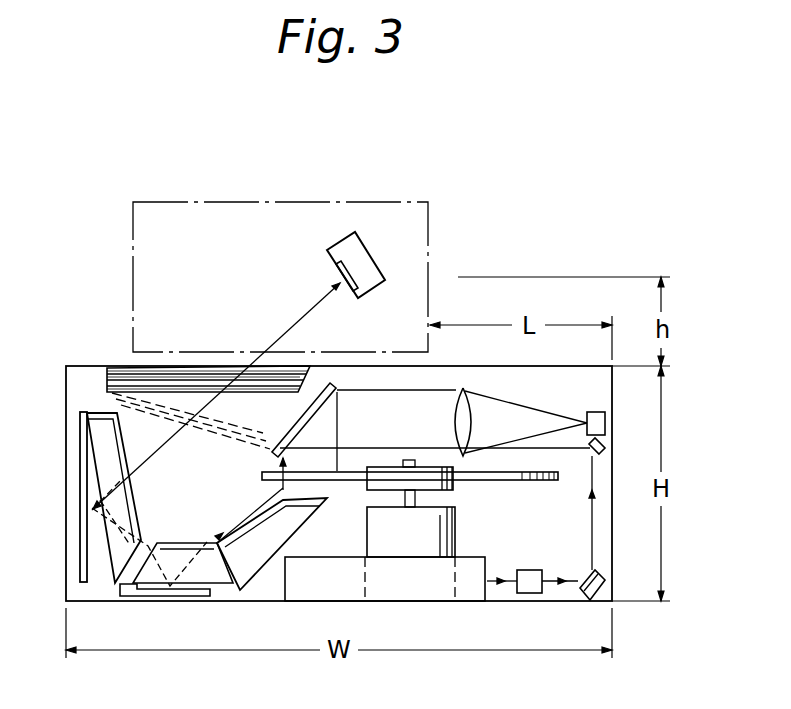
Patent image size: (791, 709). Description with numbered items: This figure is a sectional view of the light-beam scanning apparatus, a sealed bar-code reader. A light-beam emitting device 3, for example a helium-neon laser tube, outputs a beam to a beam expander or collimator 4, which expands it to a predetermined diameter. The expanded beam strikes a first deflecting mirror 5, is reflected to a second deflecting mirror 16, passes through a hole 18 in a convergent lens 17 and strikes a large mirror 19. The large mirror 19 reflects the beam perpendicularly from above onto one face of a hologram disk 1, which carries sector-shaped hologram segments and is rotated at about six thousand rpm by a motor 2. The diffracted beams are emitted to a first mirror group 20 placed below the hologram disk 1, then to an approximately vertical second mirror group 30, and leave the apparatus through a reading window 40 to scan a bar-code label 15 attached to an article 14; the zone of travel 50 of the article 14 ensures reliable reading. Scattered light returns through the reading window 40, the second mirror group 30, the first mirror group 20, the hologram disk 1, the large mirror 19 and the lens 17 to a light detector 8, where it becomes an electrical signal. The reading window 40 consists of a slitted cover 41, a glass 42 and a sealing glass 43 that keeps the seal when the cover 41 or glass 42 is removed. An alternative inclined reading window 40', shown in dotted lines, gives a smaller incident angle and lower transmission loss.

The hologram disk 1 is at (520, 481).
The motor 2 is at (455, 527).
The light-beam emitting device 3 is at (432, 596).
The collimator 4 is at (530, 594).
The first deflecting mirror 5 is at (592, 600).
The light detector 8 is at (606, 420).
The article 14 is at (372, 251).
The bar-code label 15 is at (338, 280).
The second deflecting mirror 16 is at (606, 446).
The convergent lens 17 is at (466, 392).
The hole 18 is at (470, 455).
The large mirror 19 is at (284, 425).
The first mirror group 20 is at (241, 595).
The second mirror group 30 is at (78, 462).
The reading window 40 is at (166, 391).
The reading window 40' is at (191, 444).
The cover 41 is at (116, 373).
The glass 42 is at (110, 386).
The sealing glass 43 is at (112, 390).
The zone of travel 50 is at (430, 243).